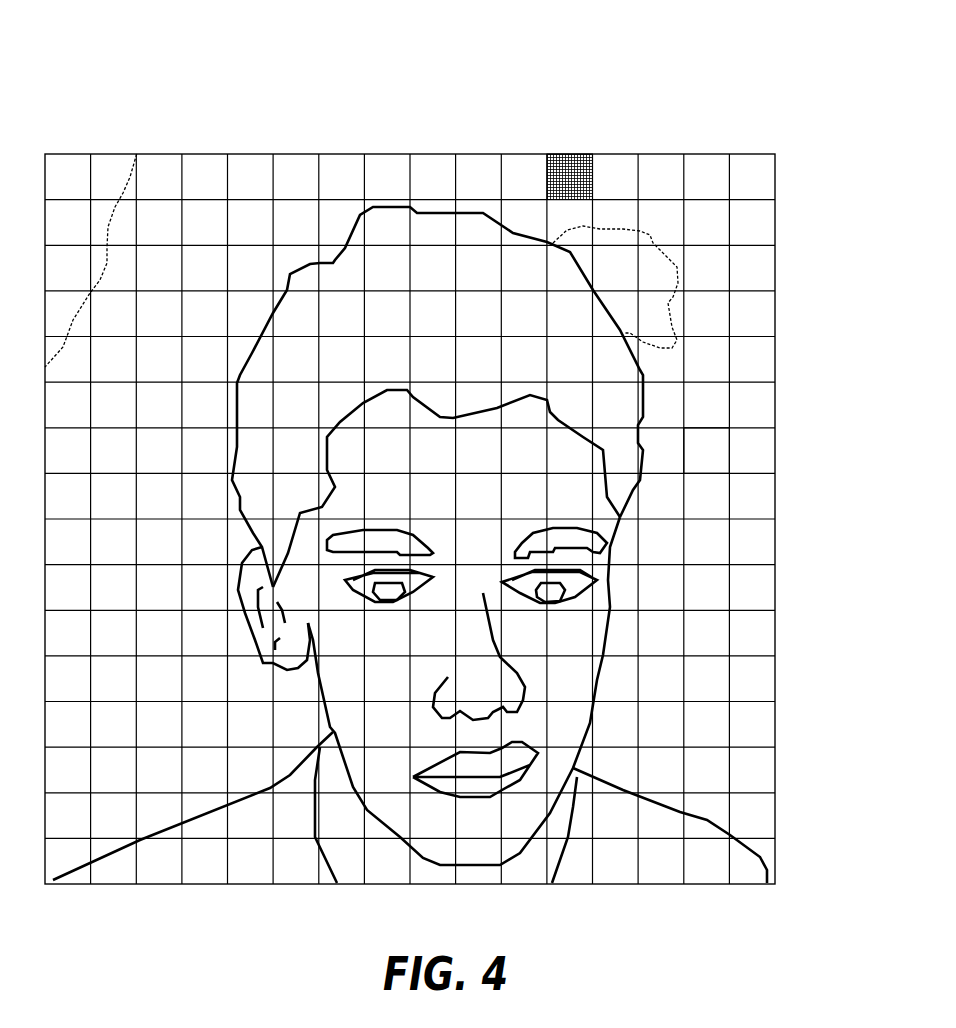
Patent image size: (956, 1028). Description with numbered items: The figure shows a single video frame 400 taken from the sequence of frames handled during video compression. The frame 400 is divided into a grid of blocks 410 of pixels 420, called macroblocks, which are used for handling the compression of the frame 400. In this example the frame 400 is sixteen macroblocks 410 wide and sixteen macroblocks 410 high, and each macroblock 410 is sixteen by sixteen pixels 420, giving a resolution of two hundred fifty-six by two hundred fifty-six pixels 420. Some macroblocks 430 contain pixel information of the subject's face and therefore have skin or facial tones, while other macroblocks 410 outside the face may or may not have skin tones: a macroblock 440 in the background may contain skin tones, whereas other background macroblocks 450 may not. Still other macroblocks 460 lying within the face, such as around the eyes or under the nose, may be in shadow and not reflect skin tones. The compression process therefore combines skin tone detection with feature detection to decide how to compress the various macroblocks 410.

The video frame 400 is at (113, 70).
The macroblock 410 is at (435, 160).
The pixel 420 is at (568, 160).
The macroblock containing facial pixel information 430 is at (577, 677).
The background macroblock containing skin tones 440 is at (658, 315).
The background macroblock without skin tones 450 is at (710, 438).
The facial macroblock without skin tones 460 is at (537, 583).